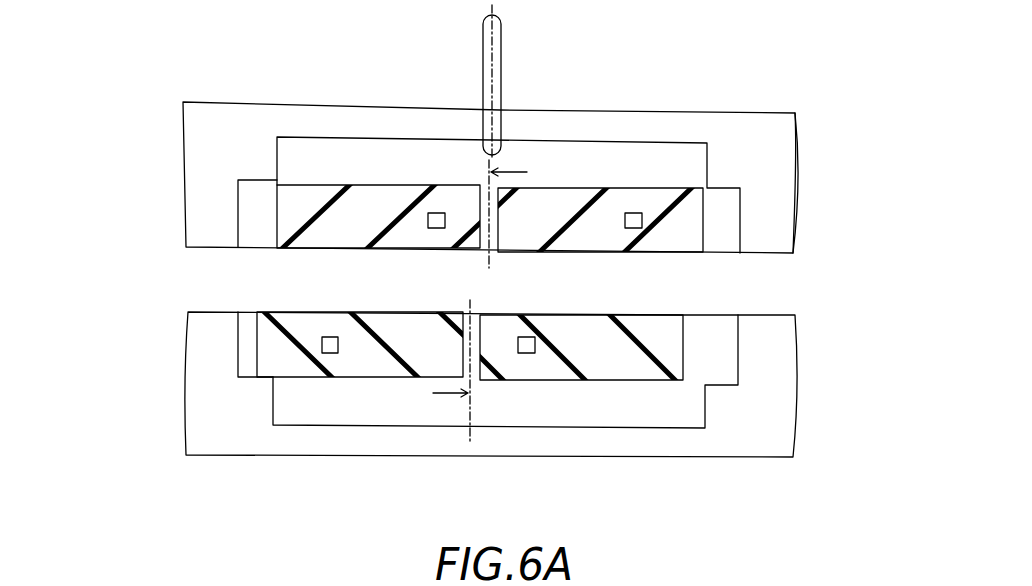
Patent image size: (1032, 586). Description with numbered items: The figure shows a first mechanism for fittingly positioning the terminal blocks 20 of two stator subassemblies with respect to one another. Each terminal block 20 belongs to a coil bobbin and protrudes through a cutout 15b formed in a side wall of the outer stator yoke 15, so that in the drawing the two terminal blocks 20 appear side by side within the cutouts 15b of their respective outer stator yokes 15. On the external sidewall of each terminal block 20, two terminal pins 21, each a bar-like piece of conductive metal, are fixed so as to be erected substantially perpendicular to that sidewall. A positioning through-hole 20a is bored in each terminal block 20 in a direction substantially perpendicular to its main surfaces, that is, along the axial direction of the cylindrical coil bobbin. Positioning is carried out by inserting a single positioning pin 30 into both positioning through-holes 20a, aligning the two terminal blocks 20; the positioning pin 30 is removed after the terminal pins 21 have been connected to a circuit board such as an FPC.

The outer stator yoke 15 is at (770, 190).
The cutout 15b is at (240, 212).
The terminal block 20 is at (545, 228).
The positioning through-hole 20a is at (490, 246).
The terminal pin 21 is at (436, 213).
The positioning pin 30 is at (484, 42).